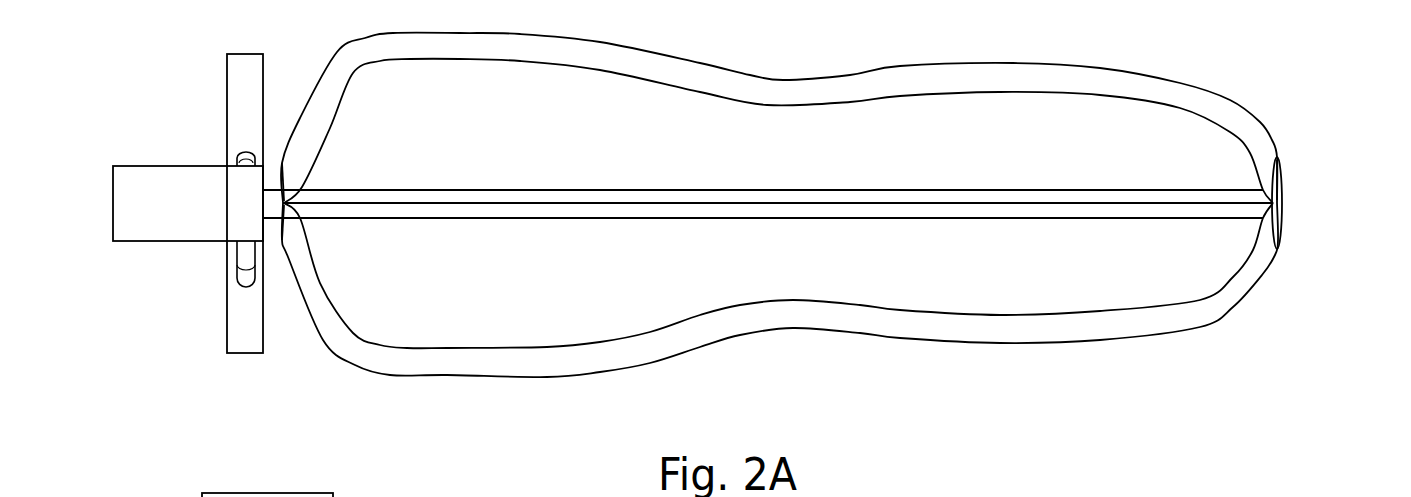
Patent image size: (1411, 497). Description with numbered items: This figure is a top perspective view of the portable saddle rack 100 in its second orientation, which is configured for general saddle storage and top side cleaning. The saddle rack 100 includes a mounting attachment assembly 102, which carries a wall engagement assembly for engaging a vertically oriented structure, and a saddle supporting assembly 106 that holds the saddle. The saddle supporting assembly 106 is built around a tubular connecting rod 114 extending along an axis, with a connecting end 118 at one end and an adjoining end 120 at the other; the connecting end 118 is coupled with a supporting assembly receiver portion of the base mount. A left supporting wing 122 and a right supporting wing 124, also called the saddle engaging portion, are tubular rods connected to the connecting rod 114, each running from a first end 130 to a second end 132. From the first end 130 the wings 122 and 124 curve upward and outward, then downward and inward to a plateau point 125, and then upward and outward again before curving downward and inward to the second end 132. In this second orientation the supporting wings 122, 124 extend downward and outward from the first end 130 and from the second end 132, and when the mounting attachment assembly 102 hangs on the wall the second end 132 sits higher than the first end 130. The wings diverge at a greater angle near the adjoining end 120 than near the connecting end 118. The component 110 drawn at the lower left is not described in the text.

The saddle rack 100 is at (779, 227).
The mounting attachment assembly 102 is at (185, 323).
The saddle supporting assembly 106 is at (738, 252).
The controller 110 is at (238, 493).
The connecting rod 114 is at (575, 208).
The connecting end 118 is at (285, 223).
The adjoining end 120 is at (1282, 213).
The left supporting wing 122 is at (678, 338).
The right supporting wing 124 is at (637, 68).
The plateau point 125 is at (777, 98).
The first end 130 is at (287, 185).
The second end 132 is at (1280, 160).